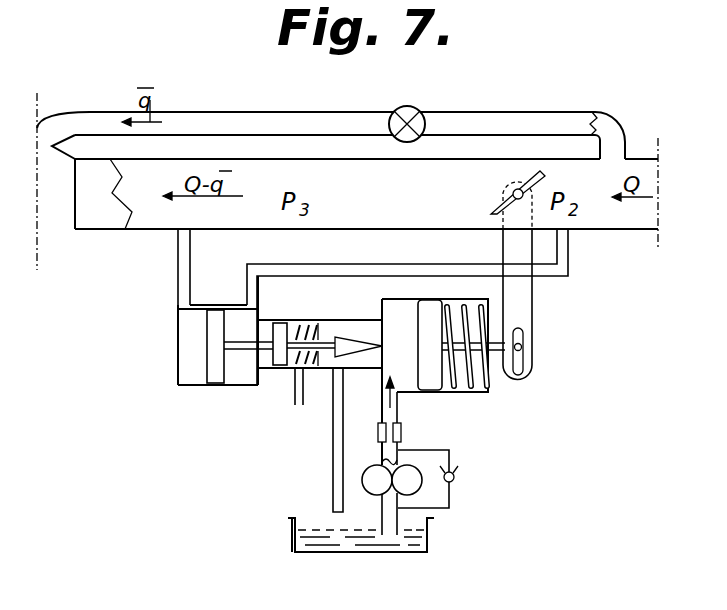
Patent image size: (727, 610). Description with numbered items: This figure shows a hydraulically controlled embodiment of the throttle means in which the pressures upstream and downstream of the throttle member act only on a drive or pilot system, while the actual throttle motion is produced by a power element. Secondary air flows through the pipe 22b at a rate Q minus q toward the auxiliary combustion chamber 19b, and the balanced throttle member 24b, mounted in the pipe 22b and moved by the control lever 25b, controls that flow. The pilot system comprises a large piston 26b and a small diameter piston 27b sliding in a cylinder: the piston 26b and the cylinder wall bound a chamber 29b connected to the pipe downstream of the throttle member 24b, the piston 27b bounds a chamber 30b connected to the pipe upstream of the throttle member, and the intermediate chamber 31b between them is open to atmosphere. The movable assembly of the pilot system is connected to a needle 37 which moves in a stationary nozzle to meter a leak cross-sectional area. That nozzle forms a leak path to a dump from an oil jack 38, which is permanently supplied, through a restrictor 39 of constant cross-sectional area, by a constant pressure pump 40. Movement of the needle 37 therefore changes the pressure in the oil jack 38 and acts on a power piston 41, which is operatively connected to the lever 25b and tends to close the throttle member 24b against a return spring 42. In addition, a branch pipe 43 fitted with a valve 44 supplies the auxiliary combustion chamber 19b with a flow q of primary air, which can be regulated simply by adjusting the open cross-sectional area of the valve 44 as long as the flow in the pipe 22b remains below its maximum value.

The auxiliary combustion chamber 19b is at (40, 252).
The pipe 22b is at (300, 230).
The throttle member 24b is at (502, 212).
The control lever 25b is at (520, 312).
The piston 26b is at (215, 370).
The small diameter piston 27b is at (282, 357).
The chamber 29b is at (190, 342).
The chamber 30b is at (305, 323).
The intermediate chamber 31b is at (252, 322).
The needle 37 is at (345, 348).
The oil jack 38 is at (468, 402).
The restrictor 39 is at (401, 433).
The constant pressure pump 40 is at (410, 483).
The power piston 41 is at (427, 357).
The return spring 42 is at (475, 370).
The branch pipe 43 is at (572, 123).
The valve 44 is at (412, 112).